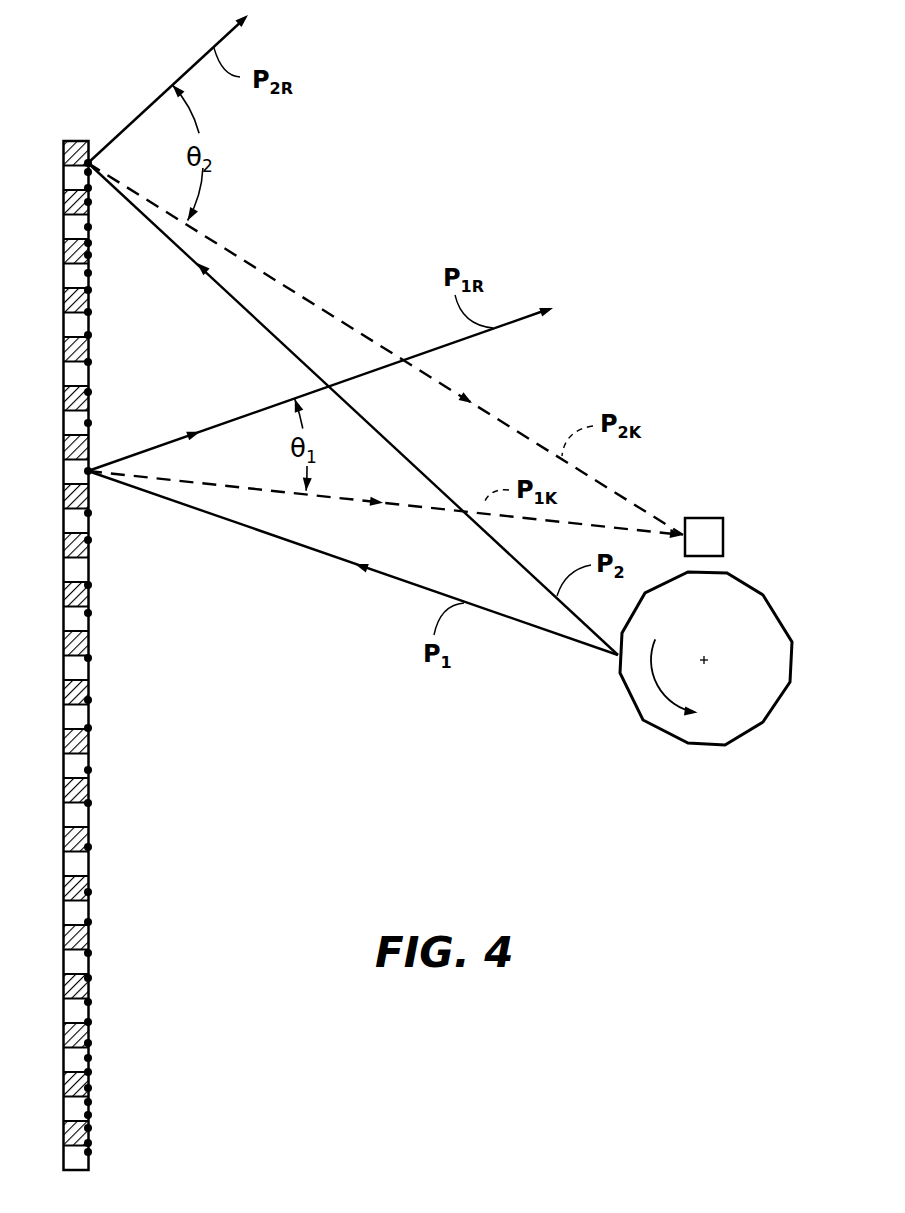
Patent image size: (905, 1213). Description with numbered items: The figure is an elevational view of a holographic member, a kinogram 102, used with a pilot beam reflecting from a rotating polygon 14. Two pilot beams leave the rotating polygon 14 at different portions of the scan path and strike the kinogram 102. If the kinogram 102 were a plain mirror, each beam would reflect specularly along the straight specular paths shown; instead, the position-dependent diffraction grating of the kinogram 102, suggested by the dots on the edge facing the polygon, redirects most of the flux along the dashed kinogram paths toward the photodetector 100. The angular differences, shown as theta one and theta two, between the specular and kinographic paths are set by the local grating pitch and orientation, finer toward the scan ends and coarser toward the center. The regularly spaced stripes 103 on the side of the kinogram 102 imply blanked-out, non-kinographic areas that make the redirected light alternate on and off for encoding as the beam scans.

The rotating polygon 14 is at (757, 593).
The photodetector 100 is at (705, 518).
The kinogram 102 is at (63, 718).
The stripes 103 is at (65, 847).